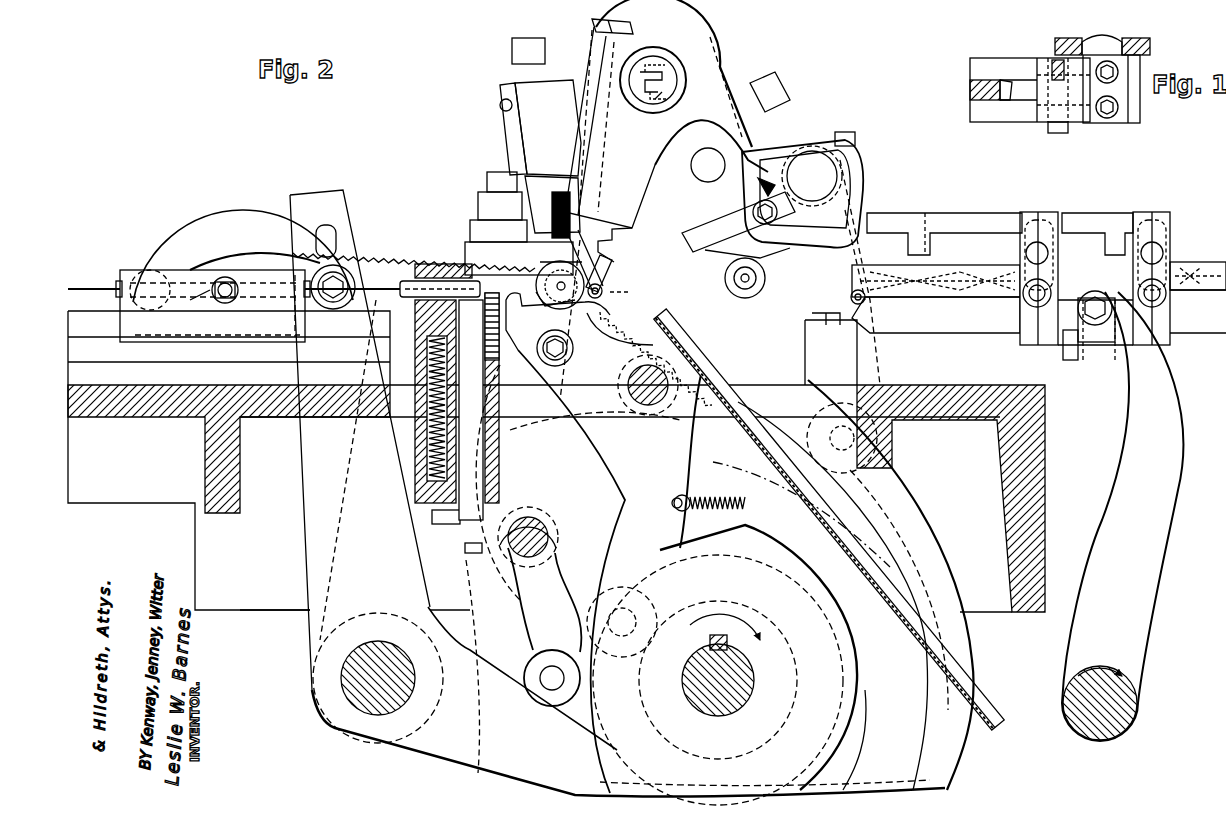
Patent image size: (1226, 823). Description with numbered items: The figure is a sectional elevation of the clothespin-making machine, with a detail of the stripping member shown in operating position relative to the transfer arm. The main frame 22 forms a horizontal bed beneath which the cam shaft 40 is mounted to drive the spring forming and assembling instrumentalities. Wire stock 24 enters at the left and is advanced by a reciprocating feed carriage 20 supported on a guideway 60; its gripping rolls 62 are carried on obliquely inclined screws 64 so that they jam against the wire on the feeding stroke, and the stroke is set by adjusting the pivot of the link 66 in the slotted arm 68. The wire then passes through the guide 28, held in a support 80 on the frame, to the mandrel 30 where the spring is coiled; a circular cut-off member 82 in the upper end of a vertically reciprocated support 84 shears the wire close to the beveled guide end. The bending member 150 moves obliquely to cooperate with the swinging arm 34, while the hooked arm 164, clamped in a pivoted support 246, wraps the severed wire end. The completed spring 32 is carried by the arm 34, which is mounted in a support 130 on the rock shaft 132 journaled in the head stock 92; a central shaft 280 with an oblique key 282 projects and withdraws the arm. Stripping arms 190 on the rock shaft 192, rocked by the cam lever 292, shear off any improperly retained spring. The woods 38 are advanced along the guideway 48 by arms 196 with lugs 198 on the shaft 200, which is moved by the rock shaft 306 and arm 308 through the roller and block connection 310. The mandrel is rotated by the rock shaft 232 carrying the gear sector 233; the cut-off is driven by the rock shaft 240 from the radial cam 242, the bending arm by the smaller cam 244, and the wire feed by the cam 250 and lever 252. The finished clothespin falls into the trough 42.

In FIG. 2, the carriage 20 is at (200, 268).
In FIG. 2, the main frame 22 is at (120, 420).
In FIG. 2, the wire stock 24 is at (98, 289).
In FIG. 2, the guide 28 is at (412, 280).
In FIG. 2, the mandrel 30 is at (540, 282).
In FIG. 2, the spring 32 is at (680, 297).
In FIG. 2, the swinging arm 34 is at (612, 242).
In FIG. 15, the swinging arm 34 is at (968, 90).
In FIG. 2, the woods 38 is at (960, 320).
In FIG. 2, the cam shaft 40 is at (712, 705).
In FIG. 2, the trough 42 is at (700, 368).
In FIG. 2, the guideway 48 is at (1190, 258).
In FIG. 2, the guideway 60 is at (229, 348).
In FIG. 2, the gripping rolls 62 is at (245, 300).
In FIG. 2, the obliquely inclined studs or screws 64 is at (218, 328).
In FIG. 2, the link 66 is at (243, 256).
In FIG. 2, the arm 68 is at (350, 195).
In FIG. 2, the support 80 is at (442, 262).
In FIG. 2, the circular cut-off member 82 is at (499, 365).
In FIG. 2, the support 84 is at (471, 426).
In FIG. 2, the head stock 92 is at (710, 58).
In FIG. 2, the support 130 is at (626, 220).
In FIG. 2, the rock shaft 132 is at (676, 62).
In FIG. 2, the bending member 150 is at (532, 47).
In FIG. 2, the arm 164 is at (566, 326).
In FIG. 2, the stripping arm 190 is at (700, 232).
In FIG. 15, the stripping arm 190 is at (990, 62).
In FIG. 2, the rock shaft 192 is at (802, 190).
In FIG. 15, the rock shaft 192 is at (1098, 122).
In FIG. 2, the arms 196 is at (993, 212).
In FIG. 2, the lugs 198 is at (930, 250).
In FIG. 2, the shaft 200 is at (1142, 317).
In FIG. 2, the rock shaft 232 is at (380, 646).
In FIG. 2, the gear sector 233 is at (420, 242).
In FIG. 2, the rock shaft 240 is at (527, 599).
In FIG. 2, the radial cam 242 is at (855, 655).
In FIG. 2, the radial cam 244 is at (760, 612).
In FIG. 2, the pivotally mounted support 246 is at (600, 441).
In FIG. 2, the cam 250 is at (948, 765).
In FIG. 2, the lever 252 is at (458, 762).
In FIG. 2, the central shaft 280 is at (670, 82).
In FIG. 2, the oblique key portion 282 is at (660, 95).
In FIG. 2, the cam lever 292 is at (868, 248).
In FIG. 2, the rock shaft 306 is at (1102, 725).
In FIG. 2, the arm 308 is at (1122, 516).
In FIG. 2, the roller and block connection 310 is at (1068, 362).